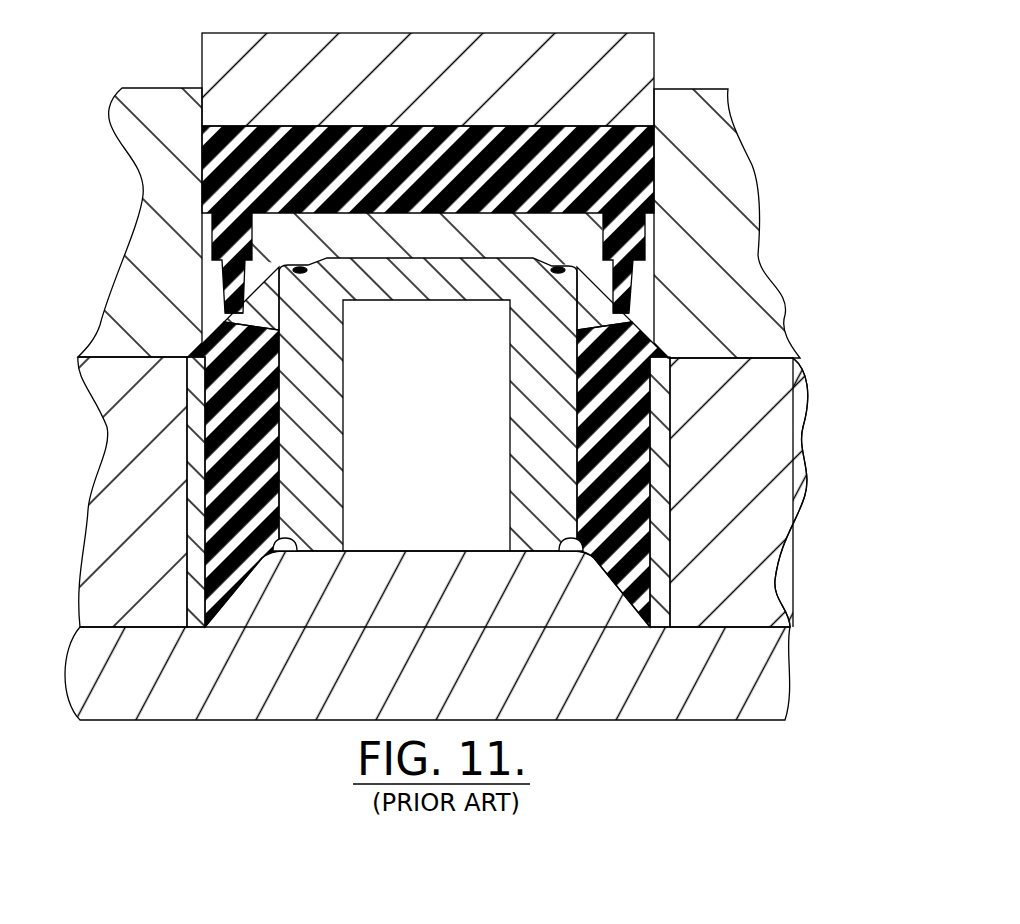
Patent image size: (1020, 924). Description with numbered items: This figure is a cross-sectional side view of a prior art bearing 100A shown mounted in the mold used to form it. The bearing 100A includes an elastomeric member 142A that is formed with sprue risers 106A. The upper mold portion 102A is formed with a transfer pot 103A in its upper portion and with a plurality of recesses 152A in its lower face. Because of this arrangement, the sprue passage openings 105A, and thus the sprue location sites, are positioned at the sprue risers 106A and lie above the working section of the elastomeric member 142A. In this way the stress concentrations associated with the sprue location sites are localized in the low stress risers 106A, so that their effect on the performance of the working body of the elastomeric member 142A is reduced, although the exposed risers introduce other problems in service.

The bearing 100A is at (672, 482).
The upper mold portion 102A is at (722, 222).
The transfer pot 103A is at (643, 167).
The sprue passage openings 105A is at (222, 308).
The sprue risers 106A is at (212, 335).
The elastomeric member 142A is at (641, 532).
The recesses 152A is at (595, 322).